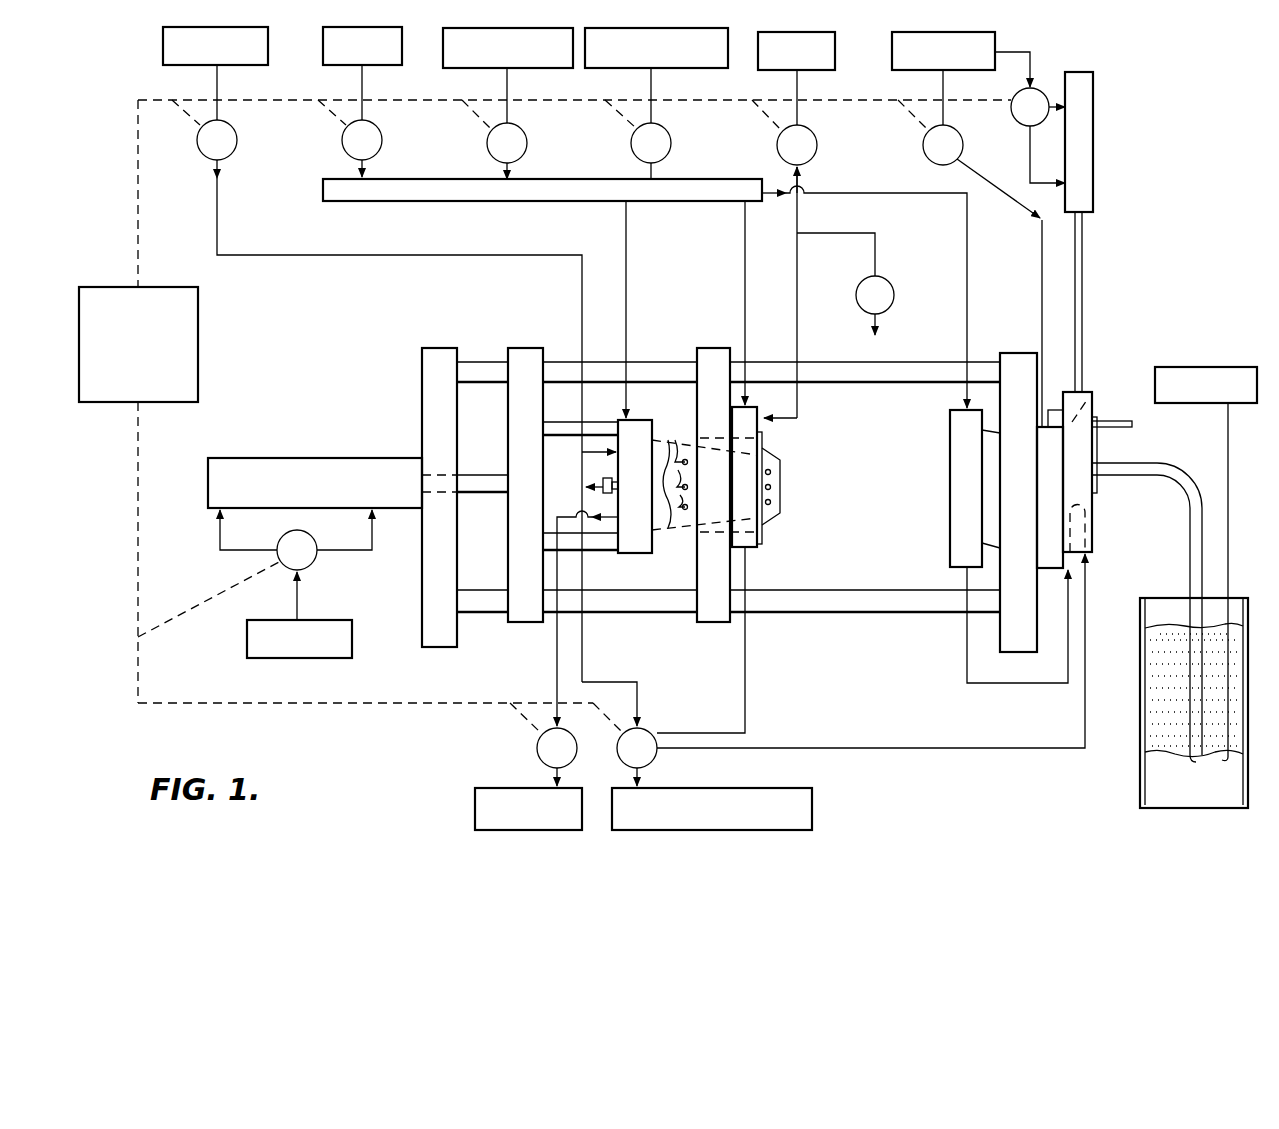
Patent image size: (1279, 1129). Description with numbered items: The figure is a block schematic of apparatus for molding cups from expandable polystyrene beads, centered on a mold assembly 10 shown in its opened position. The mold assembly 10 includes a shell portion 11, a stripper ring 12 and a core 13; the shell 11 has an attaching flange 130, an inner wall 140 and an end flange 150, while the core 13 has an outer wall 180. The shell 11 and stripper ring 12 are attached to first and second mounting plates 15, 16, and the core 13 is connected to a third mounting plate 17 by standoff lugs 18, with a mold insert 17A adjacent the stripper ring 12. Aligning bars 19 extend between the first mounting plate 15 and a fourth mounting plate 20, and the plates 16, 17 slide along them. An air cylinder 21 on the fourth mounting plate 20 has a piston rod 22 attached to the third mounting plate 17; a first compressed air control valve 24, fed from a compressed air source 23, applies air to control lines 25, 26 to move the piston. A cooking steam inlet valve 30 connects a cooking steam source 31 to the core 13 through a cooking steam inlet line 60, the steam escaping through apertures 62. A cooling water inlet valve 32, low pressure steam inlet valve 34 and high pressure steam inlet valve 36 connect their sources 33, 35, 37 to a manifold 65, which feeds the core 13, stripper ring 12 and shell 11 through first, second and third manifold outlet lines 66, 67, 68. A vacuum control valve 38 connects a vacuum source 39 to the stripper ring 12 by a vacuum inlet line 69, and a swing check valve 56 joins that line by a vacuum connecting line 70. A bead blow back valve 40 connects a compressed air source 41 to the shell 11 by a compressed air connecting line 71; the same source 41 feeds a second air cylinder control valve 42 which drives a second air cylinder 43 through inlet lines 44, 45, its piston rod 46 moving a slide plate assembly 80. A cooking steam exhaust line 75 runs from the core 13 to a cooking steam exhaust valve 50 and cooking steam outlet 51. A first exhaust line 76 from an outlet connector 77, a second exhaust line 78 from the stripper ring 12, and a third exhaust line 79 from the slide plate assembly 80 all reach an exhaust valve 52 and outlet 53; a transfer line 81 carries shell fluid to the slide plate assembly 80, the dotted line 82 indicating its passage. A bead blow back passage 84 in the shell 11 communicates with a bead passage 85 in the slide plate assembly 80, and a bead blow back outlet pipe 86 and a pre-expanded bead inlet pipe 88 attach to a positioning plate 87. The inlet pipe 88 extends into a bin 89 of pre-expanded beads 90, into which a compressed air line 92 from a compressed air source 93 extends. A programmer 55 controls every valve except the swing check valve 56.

The mold assembly 10 is at (560, 323).
The shell portion 11 is at (948, 536).
The stripper ring 12 is at (752, 550).
The core 13 is at (655, 553).
The first mounting plate 15 is at (1020, 352).
The second mounting plate 16 is at (722, 347).
The third mounting plate 17 is at (520, 347).
The mold insert 17A is at (770, 428).
The standoff lugs 18 is at (548, 422).
The aligning bars 19 is at (905, 362).
The fourth mounting plate 20 is at (420, 357).
The air cylinder 21 is at (305, 457).
The piston rod 22 is at (488, 475).
The compressed air source 23 is at (299, 639).
The first compressed air control valve 24 is at (312, 566).
The control line 25 is at (238, 550).
The control line 26 is at (360, 550).
The cooking steam inlet valve 30 is at (197, 140).
The source of cooking steam 31 is at (188, 66).
The cooling water inlet valve 32 is at (342, 140).
The source of cooling water 33 is at (335, 66).
The low pressure steam inlet valve 34 is at (487, 143).
The source of low pressure steam 35 is at (472, 69).
The high pressure steam inlet valve 36 is at (631, 146).
The source of high pressure steam 37 is at (630, 69).
The vacuum control valve 38 is at (777, 148).
The source of vacuum 39 is at (775, 71).
The bead blow back valve 40 is at (924, 148).
The source of compressed air 41 is at (903, 71).
The second air cylinder control valve 42 is at (1017, 120).
The second air cylinder 43 is at (1096, 125).
The air cylinder inlet line 44 is at (1057, 80).
The air cylinder inlet line 45 is at (1030, 155).
The piston rod 46 is at (1085, 262).
The cooking steam exhaust valve 50 is at (537, 735).
The cooking steam outlet 51 is at (492, 788).
The high and low pressure steam and cooling water exhaust valve 52 is at (650, 730).
The high and low pressure steam and cooling water outlet 53 is at (760, 788).
The programmer 55 is at (200, 300).
The swing check valve 56 is at (893, 282).
The cooking steam inlet line 60 is at (395, 250).
The apertures 62 is at (672, 440).
The manifold 65 is at (545, 202).
The first manifold outlet line 66 is at (630, 262).
The second manifold outlet line 67 is at (745, 262).
The third manifold outlet line 68 is at (860, 193).
The vacuum inlet line 69 is at (797, 250).
The vacuum connecting line 70 is at (820, 233).
The compressed air connecting line 71 is at (1012, 235).
The cooking steam exhaust line 75 is at (557, 645).
The first high and low pressure steam and cooling water exhaust line 76 is at (582, 640).
The outlet connector 77 is at (603, 480).
The second exhaust line 78 is at (745, 640).
The third exhaust line 79 is at (955, 748).
The slide plate assembly 80 is at (1092, 502).
The high and low pressure steam and cooling water transfer line 81 is at (967, 683).
The dotted line 82 is at (1087, 530).
The bead blow back passage 84 is at (1055, 410).
The bead passage 85 is at (1092, 398).
The bead blow back outlet pipe 86 is at (1110, 420).
The positioning plate 87 is at (1098, 432).
The pre-expanded bead inlet pipe 88 is at (1130, 462).
The bin 89 is at (1140, 682).
The pre-expanded beads 90 is at (1165, 656).
The compressed air line 92 is at (1228, 440).
The source of compressed air 93 is at (1195, 365).
The attaching flange 130 is at (950, 490).
The inner wall 140 is at (990, 545).
The end flange 150 is at (1050, 575).
The outer wall 180 is at (782, 452).